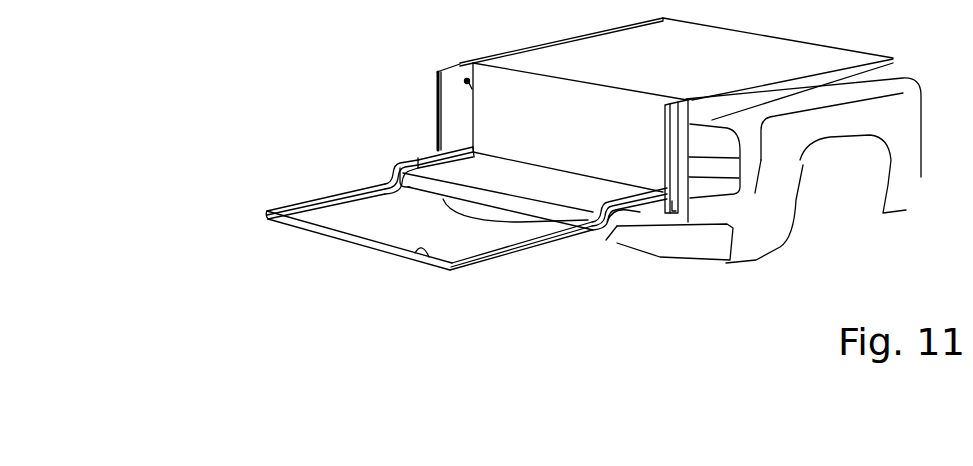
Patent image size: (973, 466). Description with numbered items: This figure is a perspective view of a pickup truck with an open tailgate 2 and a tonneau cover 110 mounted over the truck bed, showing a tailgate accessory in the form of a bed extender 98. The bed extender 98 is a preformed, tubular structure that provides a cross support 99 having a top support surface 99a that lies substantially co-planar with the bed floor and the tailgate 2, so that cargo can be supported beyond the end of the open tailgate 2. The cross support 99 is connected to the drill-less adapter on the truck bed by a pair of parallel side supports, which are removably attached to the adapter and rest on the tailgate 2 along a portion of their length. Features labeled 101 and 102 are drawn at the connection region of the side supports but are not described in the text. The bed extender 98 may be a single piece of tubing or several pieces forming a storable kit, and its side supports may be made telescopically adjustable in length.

The tailgate 2 is at (648, 120).
The bed extender 98 is at (252, 200).
The cross support 99 is at (333, 238).
The top support surface 99a is at (428, 259).
The slide rail end section 101 is at (457, 147).
The slide bracket 102 is at (406, 176).
The tonneau cover 110 is at (699, 72).